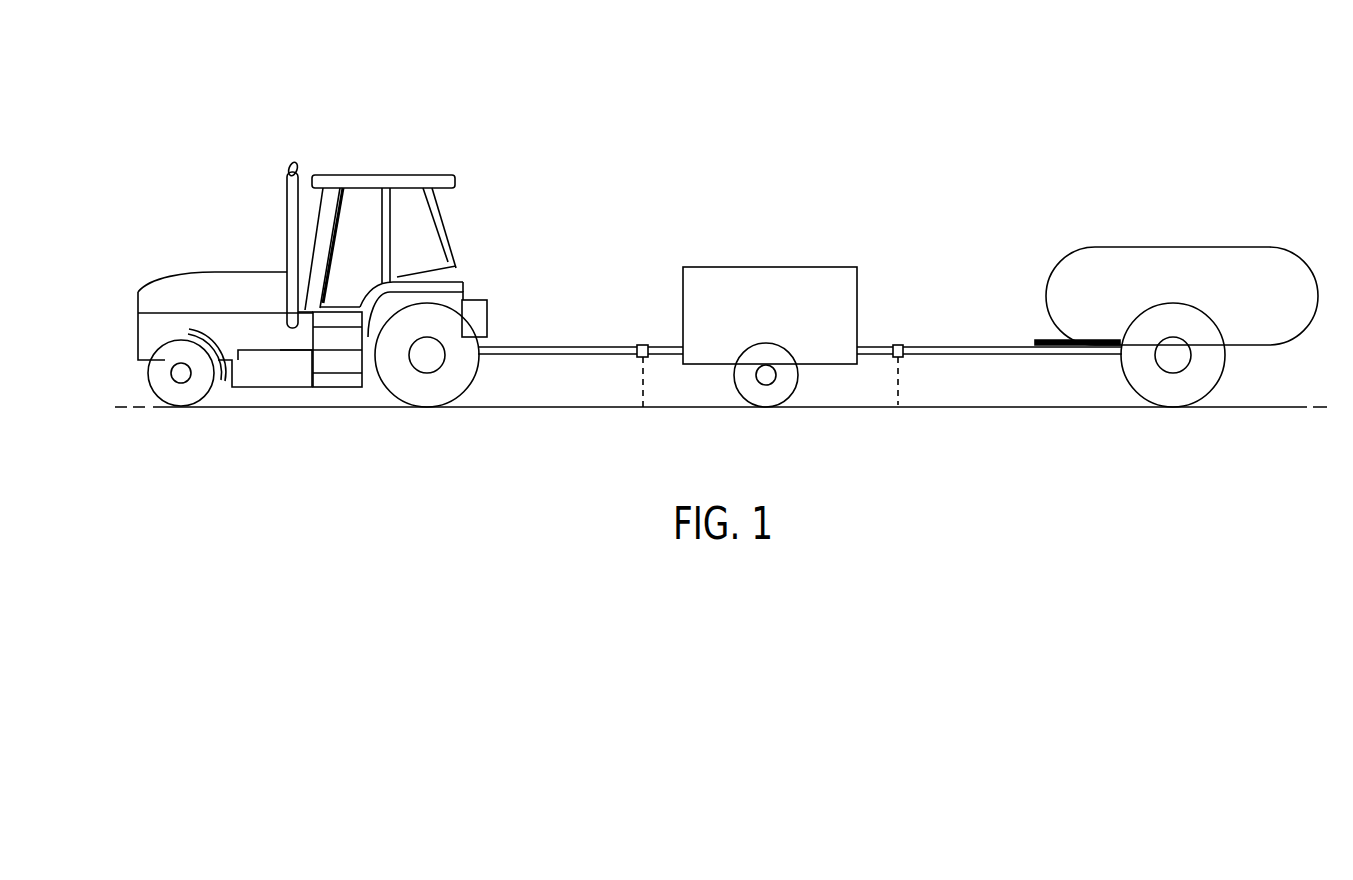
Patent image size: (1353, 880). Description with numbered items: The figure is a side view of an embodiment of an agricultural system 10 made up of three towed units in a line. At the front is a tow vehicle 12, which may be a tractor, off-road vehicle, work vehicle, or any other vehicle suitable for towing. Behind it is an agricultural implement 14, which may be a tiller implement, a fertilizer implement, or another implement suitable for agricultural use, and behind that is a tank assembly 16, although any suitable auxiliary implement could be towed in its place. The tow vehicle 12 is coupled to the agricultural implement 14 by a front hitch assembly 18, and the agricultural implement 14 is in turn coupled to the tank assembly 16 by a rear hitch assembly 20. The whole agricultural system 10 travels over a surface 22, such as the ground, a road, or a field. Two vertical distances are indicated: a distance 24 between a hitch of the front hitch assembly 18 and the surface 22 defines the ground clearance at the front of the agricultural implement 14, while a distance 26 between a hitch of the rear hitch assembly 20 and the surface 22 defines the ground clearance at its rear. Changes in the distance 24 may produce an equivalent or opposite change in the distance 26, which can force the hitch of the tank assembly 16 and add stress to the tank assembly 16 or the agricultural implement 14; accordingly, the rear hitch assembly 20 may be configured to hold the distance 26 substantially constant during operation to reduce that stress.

The agricultural system 10 is at (987, 73).
The tow vehicle 12 is at (237, 270).
The agricultural implement 14 is at (770, 267).
The tank assembly 16 is at (1183, 247).
The front hitch assembly 18 is at (667, 333).
The rear hitch assembly 20 is at (873, 333).
The surface 22 is at (673, 408).
The distance 24 is at (642, 380).
The distance 26 is at (902, 380).